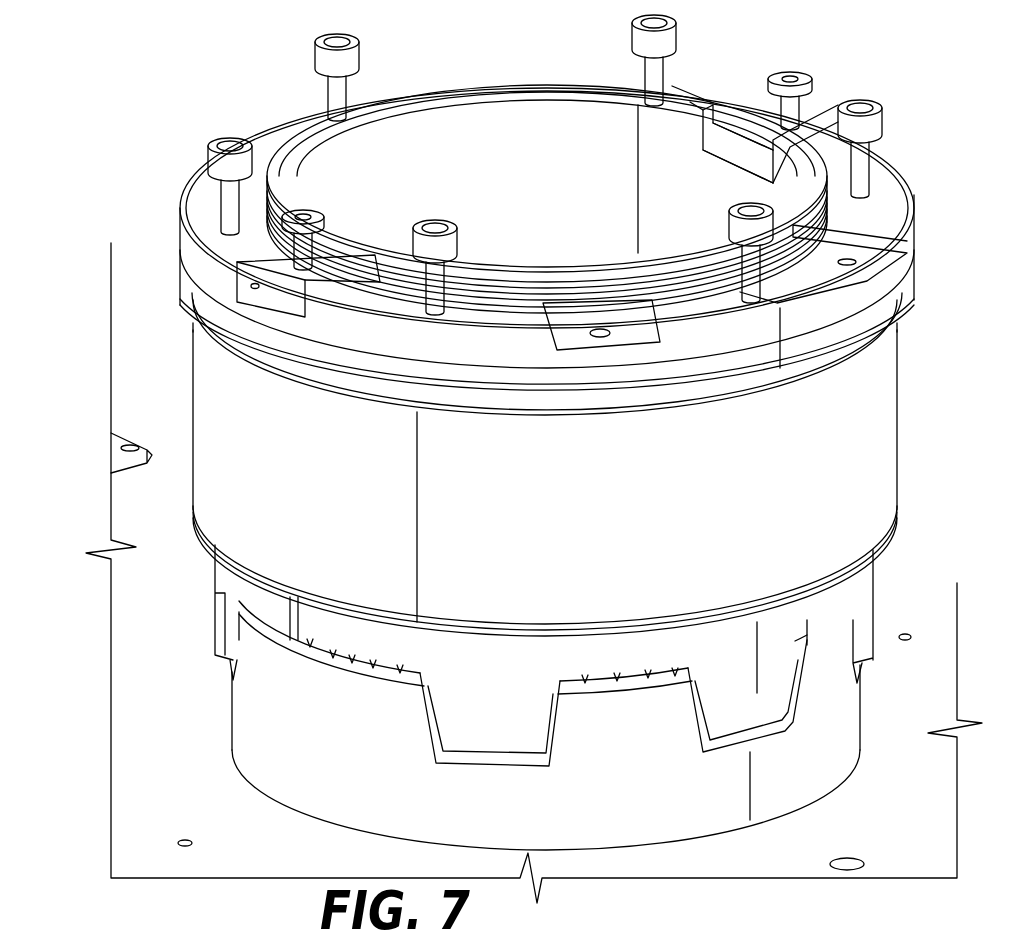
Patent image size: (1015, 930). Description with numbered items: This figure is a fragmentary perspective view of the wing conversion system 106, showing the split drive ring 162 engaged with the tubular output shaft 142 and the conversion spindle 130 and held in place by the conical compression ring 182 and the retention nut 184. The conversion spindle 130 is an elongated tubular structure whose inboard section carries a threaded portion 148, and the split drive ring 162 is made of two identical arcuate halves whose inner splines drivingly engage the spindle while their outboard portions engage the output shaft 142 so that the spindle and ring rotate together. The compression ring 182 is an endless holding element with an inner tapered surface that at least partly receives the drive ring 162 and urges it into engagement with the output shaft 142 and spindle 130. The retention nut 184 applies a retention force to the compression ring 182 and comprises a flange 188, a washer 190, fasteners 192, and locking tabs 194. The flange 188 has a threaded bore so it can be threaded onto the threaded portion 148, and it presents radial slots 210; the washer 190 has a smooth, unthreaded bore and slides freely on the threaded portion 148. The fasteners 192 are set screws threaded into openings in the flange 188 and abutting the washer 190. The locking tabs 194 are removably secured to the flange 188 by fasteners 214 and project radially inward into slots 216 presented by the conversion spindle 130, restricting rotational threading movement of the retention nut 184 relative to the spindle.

The wing conversion system 106 is at (935, 115).
The conversion spindle 130 is at (348, 163).
The tubular output shaft 142 is at (787, 772).
The threaded portion 148 is at (813, 217).
The split drive ring 162 is at (780, 658).
The conical compression ring 182 is at (865, 448).
The retention nut 184 is at (810, 328).
The flange 188 is at (890, 213).
The washer 190 is at (875, 330).
The fasteners 192 is at (333, 92).
The locking tabs 194 is at (272, 278).
The radial slots 210 is at (863, 260).
The fasteners 214 is at (290, 240).
The slots 216 is at (747, 163).